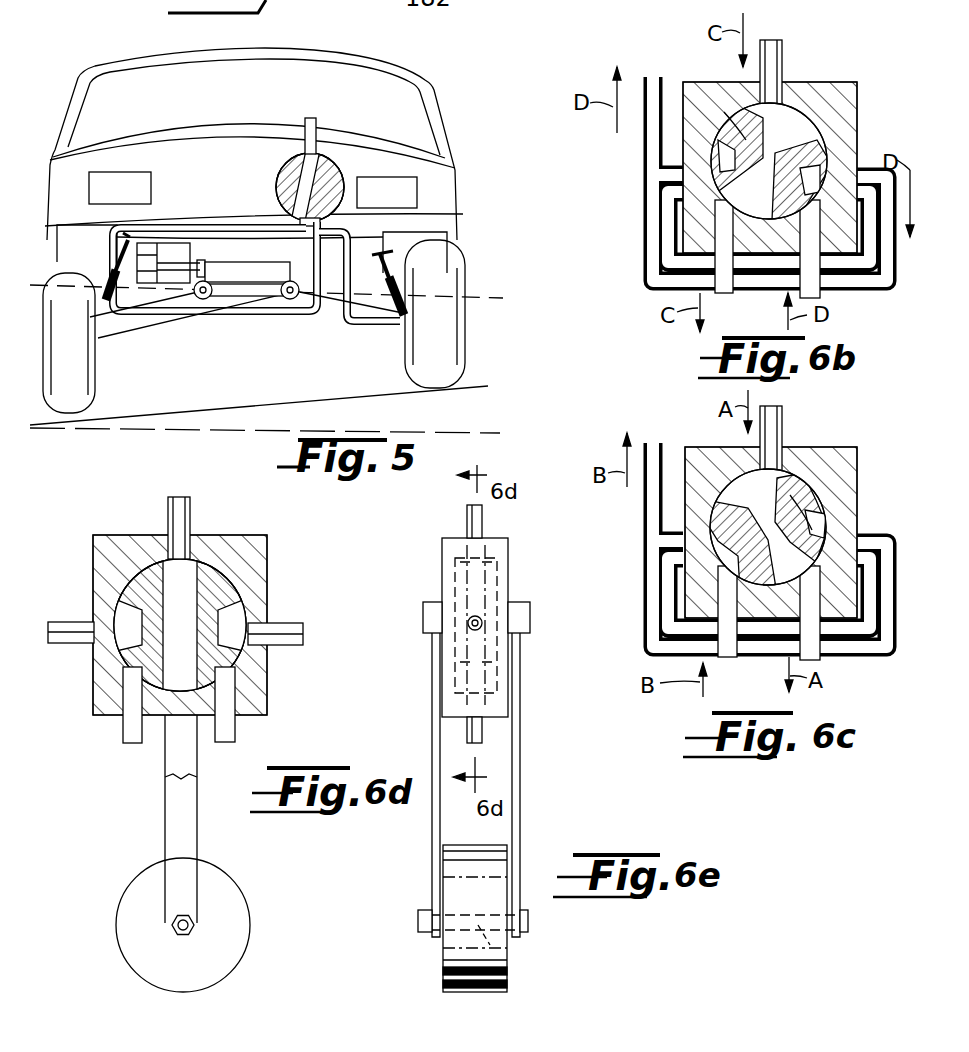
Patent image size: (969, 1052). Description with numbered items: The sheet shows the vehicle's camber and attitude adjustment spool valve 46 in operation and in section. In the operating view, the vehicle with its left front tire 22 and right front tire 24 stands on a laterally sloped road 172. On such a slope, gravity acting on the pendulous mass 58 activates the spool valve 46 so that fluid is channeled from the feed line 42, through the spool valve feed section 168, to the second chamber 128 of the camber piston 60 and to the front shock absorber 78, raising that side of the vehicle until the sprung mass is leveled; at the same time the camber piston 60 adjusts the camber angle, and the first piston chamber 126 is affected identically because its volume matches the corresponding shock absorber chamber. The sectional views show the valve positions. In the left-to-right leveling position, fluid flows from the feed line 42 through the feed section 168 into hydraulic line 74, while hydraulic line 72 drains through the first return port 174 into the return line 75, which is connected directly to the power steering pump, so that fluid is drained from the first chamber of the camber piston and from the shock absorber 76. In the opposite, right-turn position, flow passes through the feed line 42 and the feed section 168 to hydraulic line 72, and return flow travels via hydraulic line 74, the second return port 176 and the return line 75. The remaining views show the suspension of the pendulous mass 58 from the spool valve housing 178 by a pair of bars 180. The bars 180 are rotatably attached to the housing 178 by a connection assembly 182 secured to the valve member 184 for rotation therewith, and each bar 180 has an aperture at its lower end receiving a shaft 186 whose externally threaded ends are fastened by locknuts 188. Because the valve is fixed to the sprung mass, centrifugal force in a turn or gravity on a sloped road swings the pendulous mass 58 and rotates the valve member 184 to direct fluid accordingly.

In FIG. 5, the left front tire 22 is at (447, 343).
In FIG. 5, the right front tire 24 is at (85, 383).
In FIG. 5, the feed line 42 is at (316, 122).
In FIG. 6b, the feed line 42 is at (773, 40).
In FIG. 6c, the feed line 42 is at (773, 412).
In FIG. 6d, the feed line 42 is at (172, 500).
In FIG. 6e, the feed line 42 is at (467, 518).
In FIG. 5, the camber and attitude adjustment spool valve 46 is at (302, 159).
In FIG. 6b, the camber and attitude adjustment spool valve 46 is at (838, 46).
In FIG. 6c, the camber and attitude adjustment spool valve 46 is at (835, 422).
In FIG. 6d, the camber and attitude adjustment spool valve 46 is at (222, 531).
In FIG. 6e, the camber and attitude adjustment spool valve 46 is at (540, 730).
In FIG. 6d, the pendulous mass 58 is at (143, 887).
In FIG. 6e, the pendulous mass 58 is at (447, 967).
In FIG. 5, the camber piston 60 is at (160, 285).
In FIG. 5, the hydraulic line 72 is at (243, 229).
In FIG. 6b, the hydraulic line 72 is at (716, 227).
In FIG. 6c, the hydraulic line 72 is at (730, 658).
In FIG. 6d, the hydraulic line 72 is at (125, 733).
In FIG. 5, the hydraulic line 74 is at (228, 318).
In FIG. 6b, the hydraulic line 74 is at (822, 292).
In FIG. 6c, the hydraulic line 74 is at (823, 658).
In FIG. 6d, the hydraulic line 74 is at (237, 730).
In FIG. 6e, the hydraulic line 74 is at (467, 731).
In FIG. 6b, the return line 75 is at (660, 268).
In FIG. 6c, the return line 75 is at (658, 582).
In FIG. 6d, the return line 75 is at (80, 644).
In FIG. 6e, the return line 75 is at (482, 625).
In FIG. 5, the shock absorber 76 is at (400, 288).
In FIG. 5, the front shock absorber 78 is at (122, 292).
In FIG. 5, the first piston chamber 126 is at (150, 243).
In FIG. 5, the second chamber 128 is at (185, 258).
In FIG. 5, the spool valve feed section 168 is at (304, 122).
In FIG. 6b, the spool valve feed section 168 is at (812, 152).
In FIG. 6c, the spool valve feed section 168 is at (714, 506).
In FIG. 5, the laterally sloped road 172 is at (337, 395).
In FIG. 6c, the first return port 174 is at (723, 552).
In FIG. 6b, the second return port 176 is at (810, 143).
In FIG. 6d, the spool valve housing 178 is at (130, 537).
In FIG. 6e, the spool valve housing 178 is at (502, 543).
In FIG. 6d, the bars 180 is at (170, 817).
In FIG. 6e, the bars 180 is at (517, 832).
In FIG. 6e, the connection assembly 182 is at (427, 615).
In FIG. 6b, the valve member 184 is at (747, 113).
In FIG. 6c, the valve member 184 is at (810, 527).
In FIG. 6d, the valve member 184 is at (228, 590).
In FIG. 6e, the valve member 184 is at (475, 662).
In FIG. 6e, the shaft 186 is at (510, 948).
In FIG. 6e, the locknuts 188 is at (427, 930).